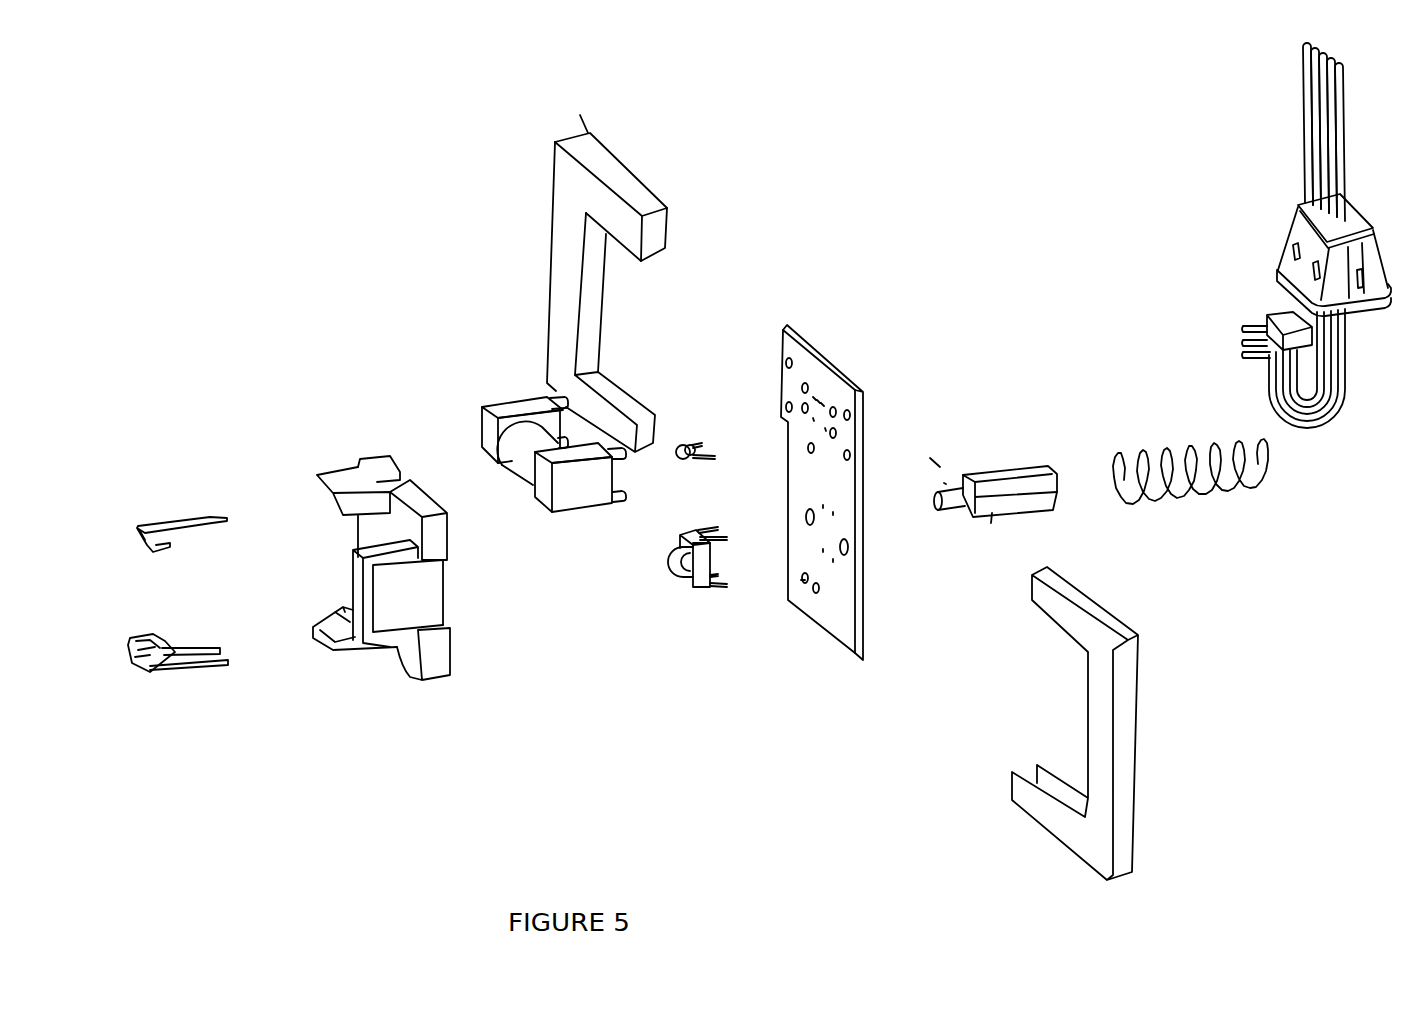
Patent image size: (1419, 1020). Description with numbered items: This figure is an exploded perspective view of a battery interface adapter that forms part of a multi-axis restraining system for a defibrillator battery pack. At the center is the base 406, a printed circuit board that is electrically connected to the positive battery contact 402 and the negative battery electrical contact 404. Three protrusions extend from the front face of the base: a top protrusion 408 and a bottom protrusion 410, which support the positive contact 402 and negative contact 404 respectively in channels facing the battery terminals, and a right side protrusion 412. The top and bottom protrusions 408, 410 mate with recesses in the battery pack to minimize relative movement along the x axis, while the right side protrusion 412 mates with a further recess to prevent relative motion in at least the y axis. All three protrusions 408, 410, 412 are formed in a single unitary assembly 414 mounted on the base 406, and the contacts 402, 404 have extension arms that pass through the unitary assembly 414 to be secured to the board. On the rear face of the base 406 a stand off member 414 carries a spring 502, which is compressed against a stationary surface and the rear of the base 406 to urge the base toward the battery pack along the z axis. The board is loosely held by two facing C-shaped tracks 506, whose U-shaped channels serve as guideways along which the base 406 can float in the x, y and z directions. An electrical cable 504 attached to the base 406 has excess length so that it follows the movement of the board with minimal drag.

The positive battery contact 402 is at (168, 523).
The negative battery electrical contact 404 is at (138, 668).
The base 406 is at (837, 360).
The top protrusion 408 is at (333, 472).
The bottom protrusion 410 is at (352, 662).
The right side protrusion 412 is at (358, 583).
The unitary assembly 414 is at (1003, 473).
The spring 502 is at (1153, 450).
The electrical cable 504 is at (1338, 428).
The mechanical tracks 506 is at (657, 185).